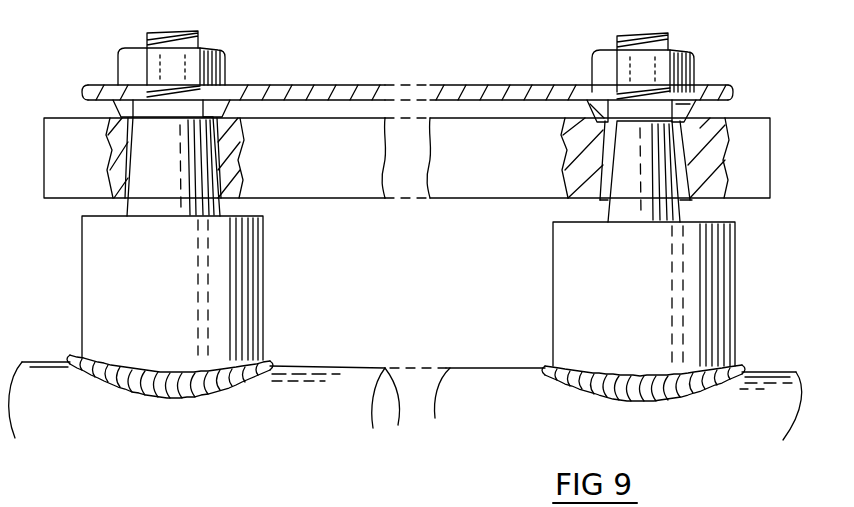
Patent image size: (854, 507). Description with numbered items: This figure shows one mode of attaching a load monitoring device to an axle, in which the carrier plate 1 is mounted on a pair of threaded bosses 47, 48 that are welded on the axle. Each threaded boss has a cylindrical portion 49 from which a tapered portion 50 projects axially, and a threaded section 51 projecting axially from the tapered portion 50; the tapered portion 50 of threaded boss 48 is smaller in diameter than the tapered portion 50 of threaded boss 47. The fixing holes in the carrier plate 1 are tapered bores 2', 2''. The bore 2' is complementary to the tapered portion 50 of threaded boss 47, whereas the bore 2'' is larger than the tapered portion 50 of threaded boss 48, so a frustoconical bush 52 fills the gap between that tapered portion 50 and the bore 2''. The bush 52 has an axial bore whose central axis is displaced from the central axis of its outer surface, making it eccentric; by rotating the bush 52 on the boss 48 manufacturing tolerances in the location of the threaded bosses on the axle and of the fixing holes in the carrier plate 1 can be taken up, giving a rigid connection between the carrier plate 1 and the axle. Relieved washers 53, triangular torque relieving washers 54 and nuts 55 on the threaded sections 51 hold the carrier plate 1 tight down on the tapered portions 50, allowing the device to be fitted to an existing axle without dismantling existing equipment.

The carrier plate 1 is at (385, 203).
The tapered bore 2' is at (238, 158).
The tapered bore 2'' is at (598, 158).
The threaded boss 47 is at (68, 285).
The threaded boss 48 is at (526, 297).
The cylindrical portion 49 is at (266, 280).
The tapered portion 50 is at (140, 163).
The threaded section 51 is at (148, 38).
The frustoconical bush 52 is at (612, 172).
The relieved washer 53 is at (592, 101).
The triangular torque relieving washer 54 is at (452, 96).
The nut 55 is at (596, 62).